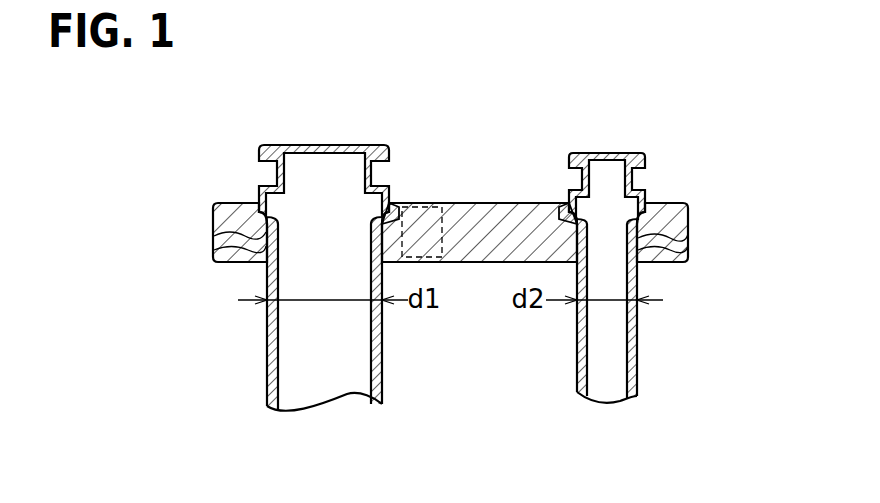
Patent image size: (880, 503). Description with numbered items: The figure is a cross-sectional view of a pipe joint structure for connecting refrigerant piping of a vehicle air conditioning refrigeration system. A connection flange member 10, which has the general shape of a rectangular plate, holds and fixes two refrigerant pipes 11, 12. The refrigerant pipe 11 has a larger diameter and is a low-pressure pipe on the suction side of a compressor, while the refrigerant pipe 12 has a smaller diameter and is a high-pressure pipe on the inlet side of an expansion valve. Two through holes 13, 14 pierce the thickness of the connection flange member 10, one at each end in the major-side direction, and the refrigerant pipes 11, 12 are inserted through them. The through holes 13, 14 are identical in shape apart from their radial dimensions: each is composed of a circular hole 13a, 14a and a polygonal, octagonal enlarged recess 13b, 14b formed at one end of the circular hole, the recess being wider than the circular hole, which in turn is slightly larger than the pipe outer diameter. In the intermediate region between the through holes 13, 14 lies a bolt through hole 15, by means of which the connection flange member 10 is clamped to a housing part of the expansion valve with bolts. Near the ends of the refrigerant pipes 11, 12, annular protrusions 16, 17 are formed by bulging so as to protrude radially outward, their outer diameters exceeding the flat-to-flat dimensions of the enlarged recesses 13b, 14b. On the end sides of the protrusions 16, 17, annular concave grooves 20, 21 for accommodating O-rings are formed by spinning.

The connection flange member 10 is at (505, 202).
The refrigerant pipe 11 is at (265, 377).
The refrigerant pipe 12 is at (640, 367).
The through hole 13 is at (123, 203).
The circular hole 13a is at (262, 250).
The enlarged recess 13b is at (247, 213).
The through hole 14 is at (777, 203).
The circular hole 14a is at (642, 250).
The enlarged recess 14b is at (660, 213).
The bolt through hole 15 is at (442, 206).
The protrusion 16 is at (394, 217).
The protrusion 17 is at (566, 213).
The annular concave groove 20 is at (276, 176).
The annular concave groove 21 is at (634, 175).